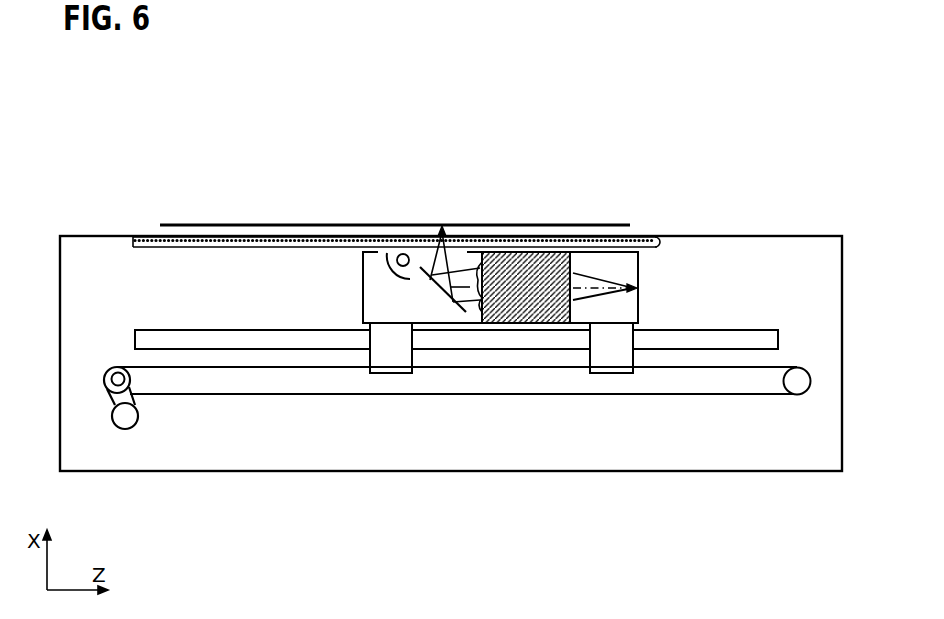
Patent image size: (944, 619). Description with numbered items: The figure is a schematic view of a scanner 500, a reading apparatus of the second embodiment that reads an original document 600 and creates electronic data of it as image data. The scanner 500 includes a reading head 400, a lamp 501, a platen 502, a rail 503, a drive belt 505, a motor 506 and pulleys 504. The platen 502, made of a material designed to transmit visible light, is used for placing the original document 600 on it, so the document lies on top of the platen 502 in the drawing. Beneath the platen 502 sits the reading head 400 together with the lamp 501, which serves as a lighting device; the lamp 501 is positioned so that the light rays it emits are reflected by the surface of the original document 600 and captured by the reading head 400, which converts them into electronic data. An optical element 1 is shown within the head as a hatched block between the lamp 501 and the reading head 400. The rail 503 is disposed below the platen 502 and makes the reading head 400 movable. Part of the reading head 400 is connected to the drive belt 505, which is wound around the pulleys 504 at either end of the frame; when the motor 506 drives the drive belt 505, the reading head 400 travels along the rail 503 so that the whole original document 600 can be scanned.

The scanner 500 is at (772, 154).
The original document 600 is at (222, 224).
The platen 502 is at (583, 237).
The lamp 501 is at (403, 254).
The optical element 1 is at (513, 253).
The reading head 400 is at (638, 276).
The rail 503 is at (760, 330).
The drive belt 505 is at (493, 395).
The pulleys 504 is at (797, 386).
The motor 506 is at (127, 429).